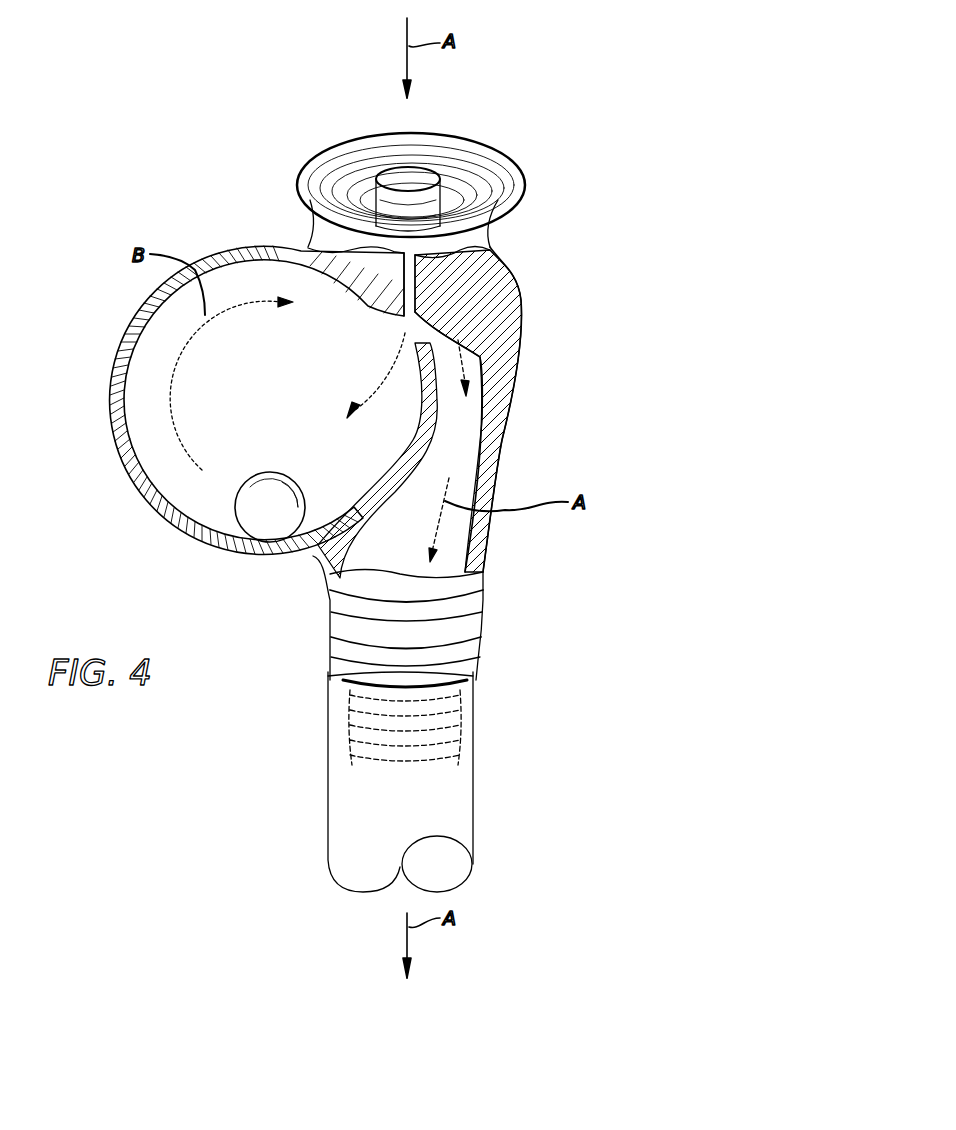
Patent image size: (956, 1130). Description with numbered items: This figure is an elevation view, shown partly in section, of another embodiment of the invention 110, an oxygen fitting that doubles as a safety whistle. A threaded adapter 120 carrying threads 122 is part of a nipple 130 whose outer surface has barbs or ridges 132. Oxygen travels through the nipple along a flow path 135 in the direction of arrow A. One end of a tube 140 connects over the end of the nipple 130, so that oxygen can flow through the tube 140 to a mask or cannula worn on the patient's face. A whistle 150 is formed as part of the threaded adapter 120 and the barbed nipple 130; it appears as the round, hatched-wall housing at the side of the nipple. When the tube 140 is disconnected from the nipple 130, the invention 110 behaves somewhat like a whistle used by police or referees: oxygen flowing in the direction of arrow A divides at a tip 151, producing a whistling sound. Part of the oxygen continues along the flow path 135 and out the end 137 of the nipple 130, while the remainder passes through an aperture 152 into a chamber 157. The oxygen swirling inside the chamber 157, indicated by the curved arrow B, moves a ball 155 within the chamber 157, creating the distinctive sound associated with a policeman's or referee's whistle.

The invention 110 is at (518, 107).
The threaded adapter 120 is at (388, 167).
The threads 122 is at (442, 203).
The nipple 130 is at (508, 272).
The barbs or ridges 132 is at (478, 633).
The flow path 135 is at (400, 548).
The end 137 is at (405, 765).
The tube 140 is at (328, 812).
The whistle 150 is at (155, 525).
The tip 151 is at (408, 313).
The aperture 152 is at (402, 322).
The ball 155 is at (268, 510).
The chamber 157 is at (240, 395).